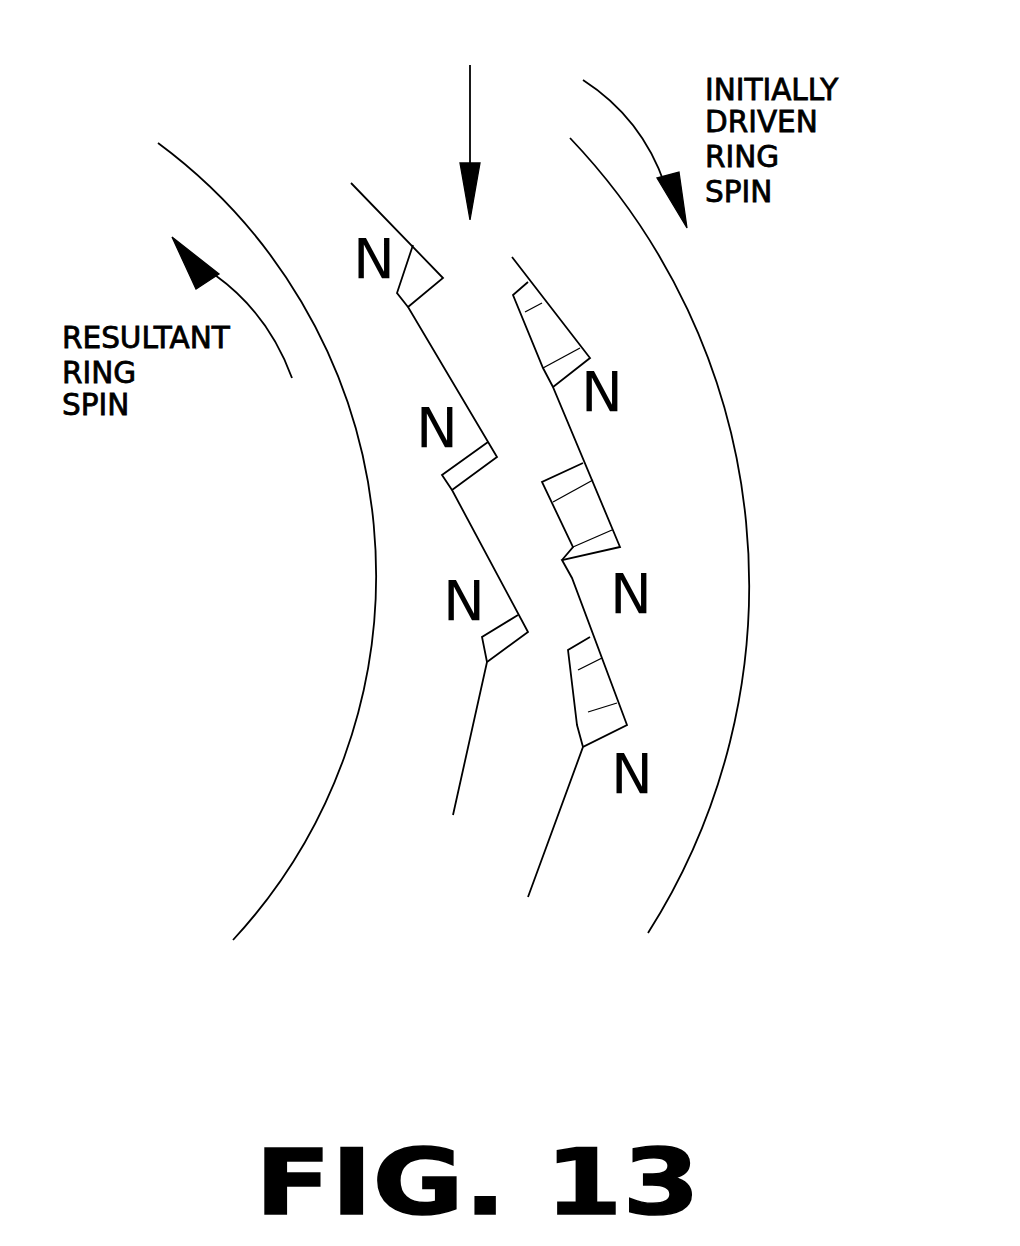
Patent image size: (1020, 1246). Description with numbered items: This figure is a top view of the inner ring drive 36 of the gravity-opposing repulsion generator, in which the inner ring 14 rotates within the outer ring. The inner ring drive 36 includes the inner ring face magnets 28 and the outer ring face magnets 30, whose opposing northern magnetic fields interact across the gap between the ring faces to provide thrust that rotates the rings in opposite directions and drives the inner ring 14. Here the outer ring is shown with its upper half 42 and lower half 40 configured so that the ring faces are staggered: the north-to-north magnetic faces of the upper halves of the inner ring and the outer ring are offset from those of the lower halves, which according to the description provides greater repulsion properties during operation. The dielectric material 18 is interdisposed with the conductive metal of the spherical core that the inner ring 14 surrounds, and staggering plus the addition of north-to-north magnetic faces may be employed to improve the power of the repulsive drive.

The inner ring 14 is at (461, 783).
The dielectric material 18 is at (413, 245).
The inner ring face magnets 28 is at (477, 480).
The outer ring face magnets 30 is at (556, 470).
The inner ring drive 36 is at (469, 117).
The lower half of outer ring 40 is at (582, 688).
The upper half of outer ring 42 is at (550, 840).